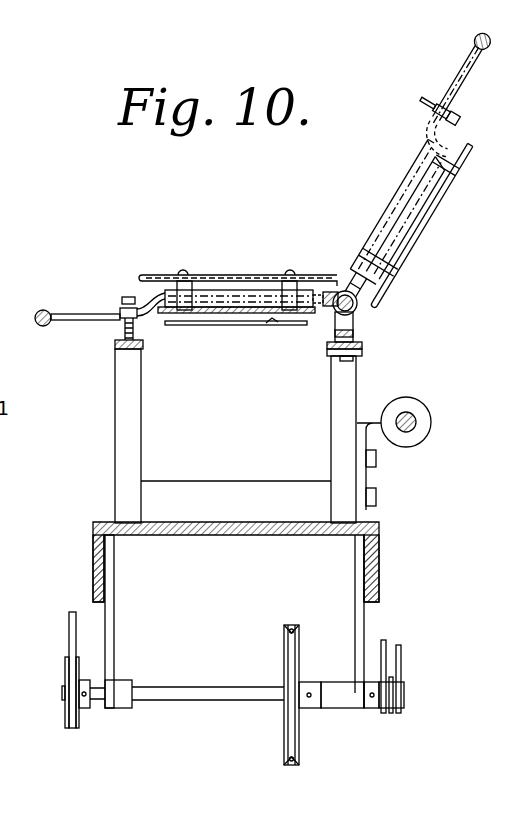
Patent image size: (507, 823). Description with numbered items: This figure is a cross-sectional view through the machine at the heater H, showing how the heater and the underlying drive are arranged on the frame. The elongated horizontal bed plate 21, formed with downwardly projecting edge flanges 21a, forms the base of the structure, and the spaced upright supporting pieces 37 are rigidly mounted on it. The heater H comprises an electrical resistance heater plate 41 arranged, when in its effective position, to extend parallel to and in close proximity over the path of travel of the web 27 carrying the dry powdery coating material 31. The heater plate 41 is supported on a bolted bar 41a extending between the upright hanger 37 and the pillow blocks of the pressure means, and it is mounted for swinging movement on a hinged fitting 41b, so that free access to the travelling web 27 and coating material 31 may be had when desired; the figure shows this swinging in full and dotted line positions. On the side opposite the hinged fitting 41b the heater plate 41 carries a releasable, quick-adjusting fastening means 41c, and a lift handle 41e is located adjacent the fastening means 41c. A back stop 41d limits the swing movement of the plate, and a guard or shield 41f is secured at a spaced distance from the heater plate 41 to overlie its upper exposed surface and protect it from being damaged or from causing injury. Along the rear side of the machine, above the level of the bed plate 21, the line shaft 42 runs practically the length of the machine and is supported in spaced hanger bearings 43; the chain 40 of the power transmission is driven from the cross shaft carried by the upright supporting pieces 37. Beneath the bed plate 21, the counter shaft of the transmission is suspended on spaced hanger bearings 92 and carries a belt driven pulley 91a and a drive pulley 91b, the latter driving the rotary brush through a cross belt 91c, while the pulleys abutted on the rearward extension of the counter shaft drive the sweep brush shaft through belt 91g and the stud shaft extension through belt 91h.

The heater H is at (168, 250).
The heater plate 41 is at (253, 307).
The guard or shield 41f is at (200, 275).
The hinged fitting 41b is at (345, 288).
The fastening means 41c is at (115, 306).
The lift handle 41e is at (44, 310).
The chain 40 is at (60, 330).
The bolted bar 41a is at (114, 339).
The web 27 is at (205, 328).
The coating material 31 is at (271, 323).
The upright supporting pieces 37 is at (125, 437).
The back stop 41d is at (388, 300).
The line shaft 42 is at (416, 417).
The hanger bearings 43 is at (369, 483).
The bed plate 21 is at (208, 521).
The edge flanges 21a is at (95, 558).
The belt driven pulley 91a is at (301, 752).
The drive pulley 91b is at (67, 717).
The cross belt 91c is at (72, 632).
The belt 91g is at (382, 642).
The belt 91h is at (397, 662).
The hanger bearings 92 is at (120, 700).